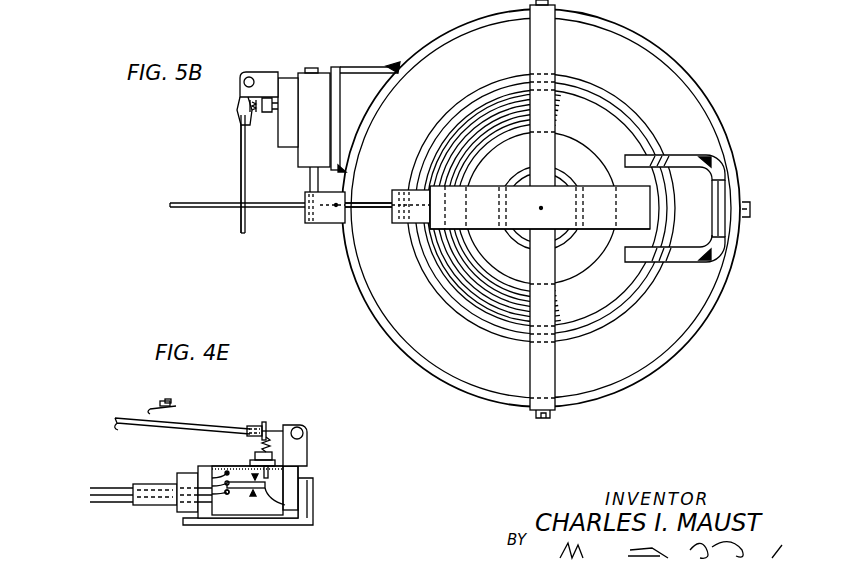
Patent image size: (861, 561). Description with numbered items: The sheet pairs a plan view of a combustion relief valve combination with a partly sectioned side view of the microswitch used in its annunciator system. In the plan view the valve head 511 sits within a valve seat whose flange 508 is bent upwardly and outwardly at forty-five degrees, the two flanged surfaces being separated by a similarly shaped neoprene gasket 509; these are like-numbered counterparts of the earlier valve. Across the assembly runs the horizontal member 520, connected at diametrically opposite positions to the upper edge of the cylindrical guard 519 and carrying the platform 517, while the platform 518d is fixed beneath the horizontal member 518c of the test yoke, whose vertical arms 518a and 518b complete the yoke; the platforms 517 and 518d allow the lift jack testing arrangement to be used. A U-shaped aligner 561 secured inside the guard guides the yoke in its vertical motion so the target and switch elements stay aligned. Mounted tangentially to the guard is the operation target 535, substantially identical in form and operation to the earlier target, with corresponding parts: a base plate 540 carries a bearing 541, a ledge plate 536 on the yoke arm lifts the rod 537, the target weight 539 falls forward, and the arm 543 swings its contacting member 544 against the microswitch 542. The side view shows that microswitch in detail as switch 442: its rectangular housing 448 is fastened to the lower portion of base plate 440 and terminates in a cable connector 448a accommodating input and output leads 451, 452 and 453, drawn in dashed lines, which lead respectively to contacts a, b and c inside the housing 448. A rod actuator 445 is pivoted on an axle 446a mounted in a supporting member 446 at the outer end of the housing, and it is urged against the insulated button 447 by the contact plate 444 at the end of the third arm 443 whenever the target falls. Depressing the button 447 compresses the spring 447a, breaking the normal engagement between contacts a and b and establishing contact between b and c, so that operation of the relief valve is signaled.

In FIG. 5B, the housing 519 is at (677, 350).
In FIG. 5B, the cross bar 520 is at (547, 54).
In FIG. 5B, the flange 508 is at (632, 113).
In FIG. 5B, the gasket 509 is at (606, 100).
In FIG. 5B, the valve head 511 is at (580, 303).
In FIG. 5B, the platform 517 is at (565, 240).
In FIG. 5B, the arm 518a is at (650, 213).
In FIG. 5B, the arm end 518b is at (428, 198).
In FIG. 5B, the arm edge 518c is at (483, 225).
In FIG. 5B, the platform 518d is at (557, 180).
In FIG. 5B, the bracket 561 is at (684, 257).
In FIG. 5B, the operation target 535 is at (234, 186).
In FIG. 5B, the coupling block 536 is at (404, 224).
In FIG. 5B, the shaft 537 is at (367, 203).
In FIG. 5B, the slide block 539 is at (326, 224).
In FIG. 5B, the support bar 540 is at (340, 72).
In FIG. 5B, the solenoid housing 541 is at (303, 73).
In FIG. 5B, the bracket 542 is at (234, 96).
In FIG. 5B, the rod 543 is at (283, 209).
In FIG. 5B, the lever 544 is at (213, 180).
In FIG. 4E, the base plate 440 is at (187, 521).
In FIG. 4E, the microswitch 442 is at (90, 425).
In FIG. 4E, the third arm 443 is at (172, 402).
In FIG. 4E, the contacting member 444 is at (158, 409).
In FIG. 4E, the rod actuator 445 is at (124, 425).
In FIG. 4E, the supporting member 446 is at (306, 460).
In FIG. 4E, the axle 446a is at (304, 436).
In FIG. 4E, the insulated button 447 is at (263, 424).
In FIG. 4E, the spring 447a is at (273, 447).
In FIG. 4E, the housing 448 is at (212, 466).
In FIG. 4E, the cable connector 448a is at (152, 505).
In FIG. 4E, the lead 451 is at (98, 488).
In FIG. 4E, the lead 452 is at (98, 495).
In FIG. 4E, the lead 453 is at (110, 503).
In FIG. 4E, the contact a is at (253, 476).
In FIG. 4E, the contact b is at (265, 500).
In FIG. 4E, the contact c is at (255, 498).